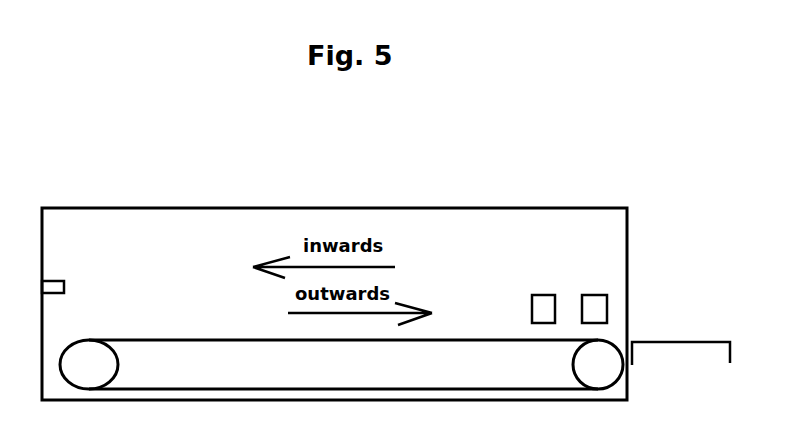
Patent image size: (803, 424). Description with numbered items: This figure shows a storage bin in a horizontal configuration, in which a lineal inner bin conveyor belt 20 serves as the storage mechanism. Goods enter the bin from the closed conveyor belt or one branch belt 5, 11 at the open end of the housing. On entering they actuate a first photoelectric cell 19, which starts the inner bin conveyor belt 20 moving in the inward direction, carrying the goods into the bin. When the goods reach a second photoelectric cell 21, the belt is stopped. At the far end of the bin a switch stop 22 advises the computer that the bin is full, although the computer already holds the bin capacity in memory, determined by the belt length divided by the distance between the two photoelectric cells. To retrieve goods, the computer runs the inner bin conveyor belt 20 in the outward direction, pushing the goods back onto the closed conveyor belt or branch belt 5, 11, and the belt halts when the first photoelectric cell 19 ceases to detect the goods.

The closed conveyor belt 5 is at (681, 363).
The branch belt 11 is at (681, 363).
The first photoelectric cell 19 is at (592, 287).
The inner bin conveyor belt 20 is at (341, 364).
The second photoelectric cell 21 is at (542, 287).
The switch stop 22 is at (73, 290).